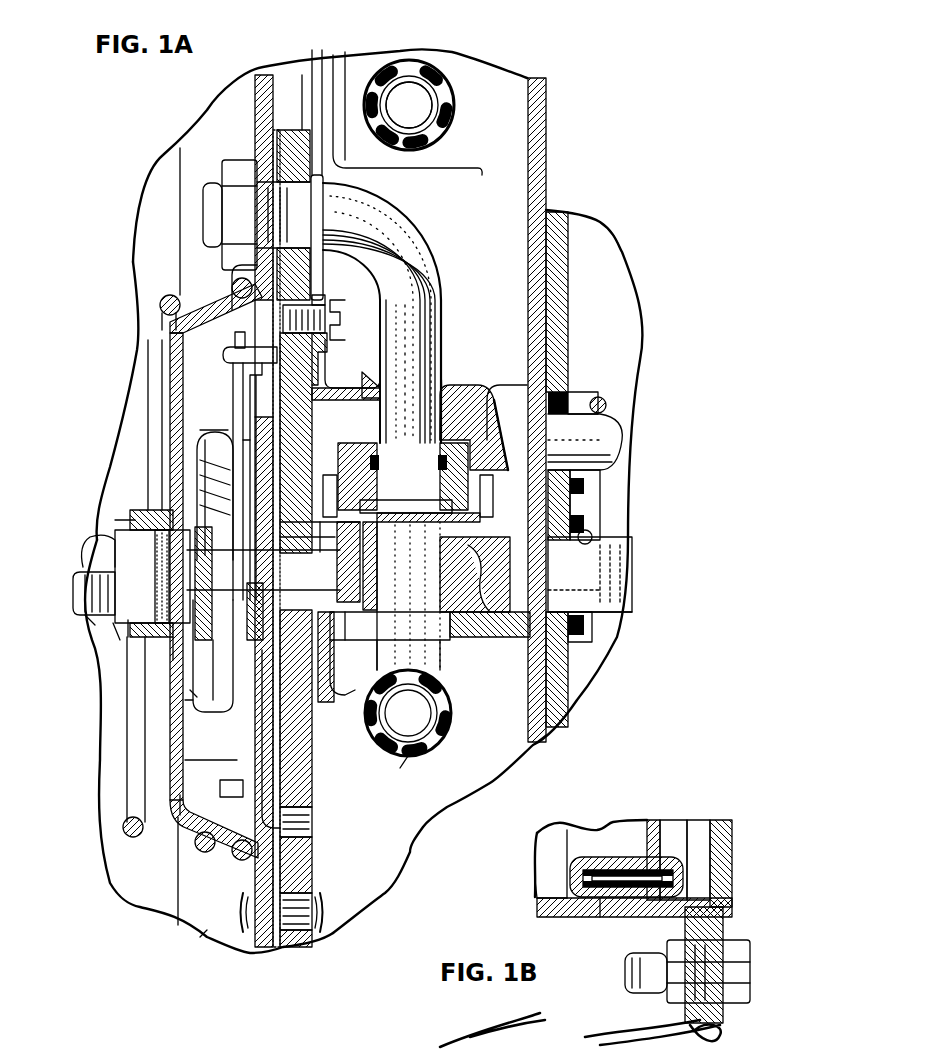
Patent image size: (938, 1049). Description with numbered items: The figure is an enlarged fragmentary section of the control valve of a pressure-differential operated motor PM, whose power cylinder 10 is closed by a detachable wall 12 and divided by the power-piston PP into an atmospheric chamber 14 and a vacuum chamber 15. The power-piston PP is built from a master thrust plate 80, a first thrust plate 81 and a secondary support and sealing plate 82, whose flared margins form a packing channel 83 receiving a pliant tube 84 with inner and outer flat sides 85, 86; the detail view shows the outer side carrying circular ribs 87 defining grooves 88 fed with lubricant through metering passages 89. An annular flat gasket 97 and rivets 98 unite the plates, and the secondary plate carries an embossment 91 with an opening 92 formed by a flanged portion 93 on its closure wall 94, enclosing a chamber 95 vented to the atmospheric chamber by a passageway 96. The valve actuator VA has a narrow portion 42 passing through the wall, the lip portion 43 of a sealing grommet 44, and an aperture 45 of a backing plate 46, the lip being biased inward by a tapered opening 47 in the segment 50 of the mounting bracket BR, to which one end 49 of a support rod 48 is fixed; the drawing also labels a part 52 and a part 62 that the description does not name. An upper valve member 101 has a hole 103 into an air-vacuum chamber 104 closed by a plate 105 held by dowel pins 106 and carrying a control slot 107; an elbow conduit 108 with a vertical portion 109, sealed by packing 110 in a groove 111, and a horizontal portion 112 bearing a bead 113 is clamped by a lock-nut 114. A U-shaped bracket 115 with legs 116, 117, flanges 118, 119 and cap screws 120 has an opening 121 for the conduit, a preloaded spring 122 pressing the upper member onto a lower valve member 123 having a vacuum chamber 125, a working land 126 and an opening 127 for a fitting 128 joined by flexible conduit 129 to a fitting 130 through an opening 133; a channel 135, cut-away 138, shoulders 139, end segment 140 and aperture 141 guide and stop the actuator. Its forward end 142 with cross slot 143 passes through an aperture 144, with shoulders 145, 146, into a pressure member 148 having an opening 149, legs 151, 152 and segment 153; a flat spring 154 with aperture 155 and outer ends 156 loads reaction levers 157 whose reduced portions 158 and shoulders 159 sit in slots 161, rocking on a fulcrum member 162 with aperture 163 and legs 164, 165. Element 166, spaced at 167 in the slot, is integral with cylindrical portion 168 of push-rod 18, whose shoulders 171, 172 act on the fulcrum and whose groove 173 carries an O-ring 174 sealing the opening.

In FIG. 1A, the power cylinder 10 is at (200, 940).
In FIG. 1B, the power cylinder 10 is at (535, 883).
In FIG. 1A, the closure wall 12 is at (548, 133).
In FIG. 1B, the closure wall 12 is at (733, 822).
In FIG. 1A, the constant pressure chamber 14 is at (495, 133).
In FIG. 1B, the constant pressure chamber 14 is at (700, 828).
In FIG. 1A, the variable pressure chamber 15 is at (185, 757).
In FIG. 1B, the variable pressure chamber 15 is at (553, 850).
In FIG. 1A, the master cylinder push-rod 18 is at (90, 613).
In FIG. 1A, the narrow portion 42 is at (640, 603).
In FIG. 1A, the lip portion 43 is at (640, 535).
In FIG. 1A, the sealing grommet 44 is at (600, 505).
In FIG. 1A, the aperture 45 is at (592, 533).
In FIG. 1A, the backing plate 46 is at (588, 530).
In FIG. 1A, the tapered opening 47 is at (622, 473).
In FIG. 1A, the support rod 48 is at (608, 430).
In FIG. 1A, the rod end 49 is at (566, 402).
In FIG. 1A, the interconnecting segment 50 is at (562, 220).
In FIG. 1A, the bolt 52 is at (160, 822).
In FIG. 1A, the boundary wall 62 is at (604, 412).
In FIG. 1A, the master thrust plate 80 is at (290, 948).
In FIG. 1A, the first thrust plate 81 is at (275, 76).
In FIG. 1B, the first thrust plate 81 is at (673, 830).
In FIG. 1A, the secondary support and sealing plate 82 is at (256, 108).
In FIG. 1B, the secondary support and sealing plate 82 is at (597, 825).
In FIG. 1B, the packing channel 83 is at (600, 857).
In FIG. 1B, the pliant tube 84 is at (598, 900).
In FIG. 1B, the inner flat side 85 is at (620, 868).
In FIG. 1B, the outer flat side 86 is at (712, 907).
In FIG. 1B, the circular ribs 87 is at (625, 898).
In FIG. 1B, the annular grooves 88 is at (620, 900).
In FIG. 1B, the metering passages 89 is at (607, 868).
In FIG. 1A, the embossment 91 is at (206, 316).
In FIG. 1A, the central circular opening 92 is at (78, 597).
In FIG. 1A, the outturned flanged portion 93 is at (128, 518).
In FIG. 1A, the closure wall of embossment 94 is at (172, 393).
In FIG. 1A, the circular chamber 95 is at (180, 830).
In FIG. 1A, the passageway 96 is at (305, 822).
In FIG. 1A, the annular flat gasket 97 is at (275, 955).
In FIG. 1A, the rivets 98 is at (240, 935).
In FIG. 1A, the upper valve member 101 is at (470, 438).
In FIG. 1A, the hole 103 is at (400, 470).
In FIG. 1A, the air-vacuum chamber 104 is at (410, 500).
In FIG. 1A, the plate 105 is at (471, 479).
In FIG. 1A, the dowel pins 106 is at (560, 470).
In FIG. 1A, the air-vacuum control slot 107 is at (273, 562).
In FIG. 1A, the elbow-type conduit 108 is at (414, 240).
In FIG. 1A, the vertical portion 109 is at (430, 310).
In FIG. 1A, the pliant packing 110 is at (397, 427).
In FIG. 1A, the internal annular groove 111 is at (418, 440).
In FIG. 1A, the horizontal portion 112 is at (363, 191).
In FIG. 1A, the circular bead 113 is at (323, 176).
In FIG. 1A, the lock-nut 114 is at (242, 168).
In FIG. 1A, the U-shaped bracket member 115 is at (497, 357).
In FIG. 1A, the top leg 116 is at (377, 383).
In FIG. 1A, the bottom leg 117 is at (478, 628).
In FIG. 1A, the lateral flange 118 is at (322, 722).
In FIG. 1A, the lateral flange 119 is at (327, 298).
In FIG. 1A, the cap screws 120 is at (333, 320).
In FIG. 1A, the opening 121 is at (443, 372).
In FIG. 1A, the preloaded spring 122 is at (331, 443).
In FIG. 1A, the lower valve member 123 is at (497, 553).
In FIG. 1A, the vacuum chamber 125 is at (400, 530).
In FIG. 1A, the working land 126 is at (430, 530).
In FIG. 1A, the opening 127 is at (418, 622).
In FIG. 1A, the rigid tubular fitting 128 is at (412, 756).
In FIG. 1A, the flexible conduit 129 is at (447, 83).
In FIG. 1A, the rigid tubular fitting 130 is at (420, 108).
In FIG. 1A, the opening 133 is at (488, 645).
In FIG. 1A, the longitudinal channel 135 is at (337, 452).
In FIG. 1A, the cut-away opening 138 is at (296, 551).
In FIG. 1A, the lateral shoulders 139 is at (570, 642).
In FIG. 1A, the vertical end segment 140 is at (560, 592).
In FIG. 1A, the rectangular aperture 141 is at (586, 622).
In FIG. 1A, the forward end portion 142 is at (203, 583).
In FIG. 1A, the cross slot 143 is at (253, 600).
In FIG. 1A, the aperture 144 is at (345, 689).
In FIG. 1A, the shoulder 145 is at (209, 668).
In FIG. 1A, the shoulder 146 is at (200, 507).
In FIG. 1A, the pressure member 148 is at (258, 388).
In FIG. 1A, the central rectangular opening 149 is at (202, 479).
In FIG. 1A, the leg 151 is at (193, 797).
In FIG. 1A, the leg 152 is at (223, 355).
In FIG. 1A, the vertical segment 153 is at (312, 800).
In FIG. 1A, the flat spring 154 is at (206, 701).
In FIG. 1A, the central aperture 155 is at (197, 697).
In FIG. 1A, the outer ends 156 is at (248, 440).
In FIG. 1A, the reaction levers 157 is at (238, 382).
In FIG. 1A, the reduced width portion 158 is at (237, 338).
In FIG. 1A, the lateral shoulders 159 is at (220, 788).
In FIG. 1A, the slot 161 is at (158, 888).
In FIG. 1A, the fulcrum member 162 is at (192, 490).
In FIG. 1A, the central rectangular aperture 163 is at (156, 585).
In FIG. 1A, the angular leg 164 is at (190, 700).
In FIG. 1A, the angular leg 165 is at (213, 432).
In FIG. 1A, the element 166 is at (173, 637).
In FIG. 1A, the space 167 is at (348, 625).
In FIG. 1A, the cylindrical portion 168 is at (113, 625).
In FIG. 1A, the shoulder 171 is at (127, 643).
In FIG. 1A, the shoulder 172 is at (113, 525).
In FIG. 1A, the external annular groove 173 is at (117, 545).
In FIG. 1A, the O-ring 174 is at (97, 543).
In FIG. 1A, the pressure-differential operated motor PM is at (184, 128).
In FIG. 1B, the pressure-differential operated motor PM is at (610, 920).
In FIG. 1A, the power-piston PP is at (318, 872).
In FIG. 1B, the power-piston PP is at (653, 818).
In FIG. 1A, the mounting bracket assembly BR is at (622, 248).
In FIG. 1A, the valve actuator VA is at (630, 550).